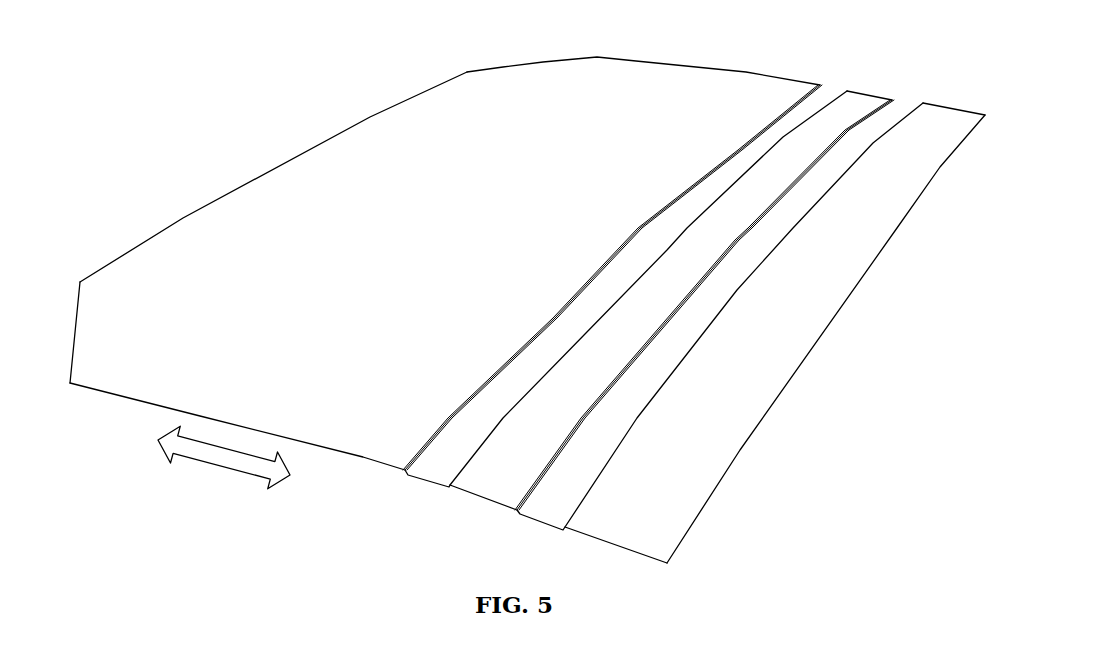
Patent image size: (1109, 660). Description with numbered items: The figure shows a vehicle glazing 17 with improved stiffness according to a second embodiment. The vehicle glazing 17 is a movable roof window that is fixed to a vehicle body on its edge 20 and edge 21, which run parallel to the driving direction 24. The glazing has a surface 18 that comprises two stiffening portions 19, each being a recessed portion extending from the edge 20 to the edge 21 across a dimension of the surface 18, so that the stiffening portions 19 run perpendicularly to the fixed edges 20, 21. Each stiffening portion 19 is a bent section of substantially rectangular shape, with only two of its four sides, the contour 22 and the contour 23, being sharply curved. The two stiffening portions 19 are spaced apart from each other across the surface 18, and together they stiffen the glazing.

The vehicle glazing 17 is at (263, 113).
The surface 18 is at (636, 77).
The stiffening portions 19 is at (684, 285).
The edge 20 is at (362, 455).
The edge 21 is at (752, 73).
The contour 22 is at (610, 258).
The contour 23 is at (667, 247).
The driving direction 24 is at (230, 468).